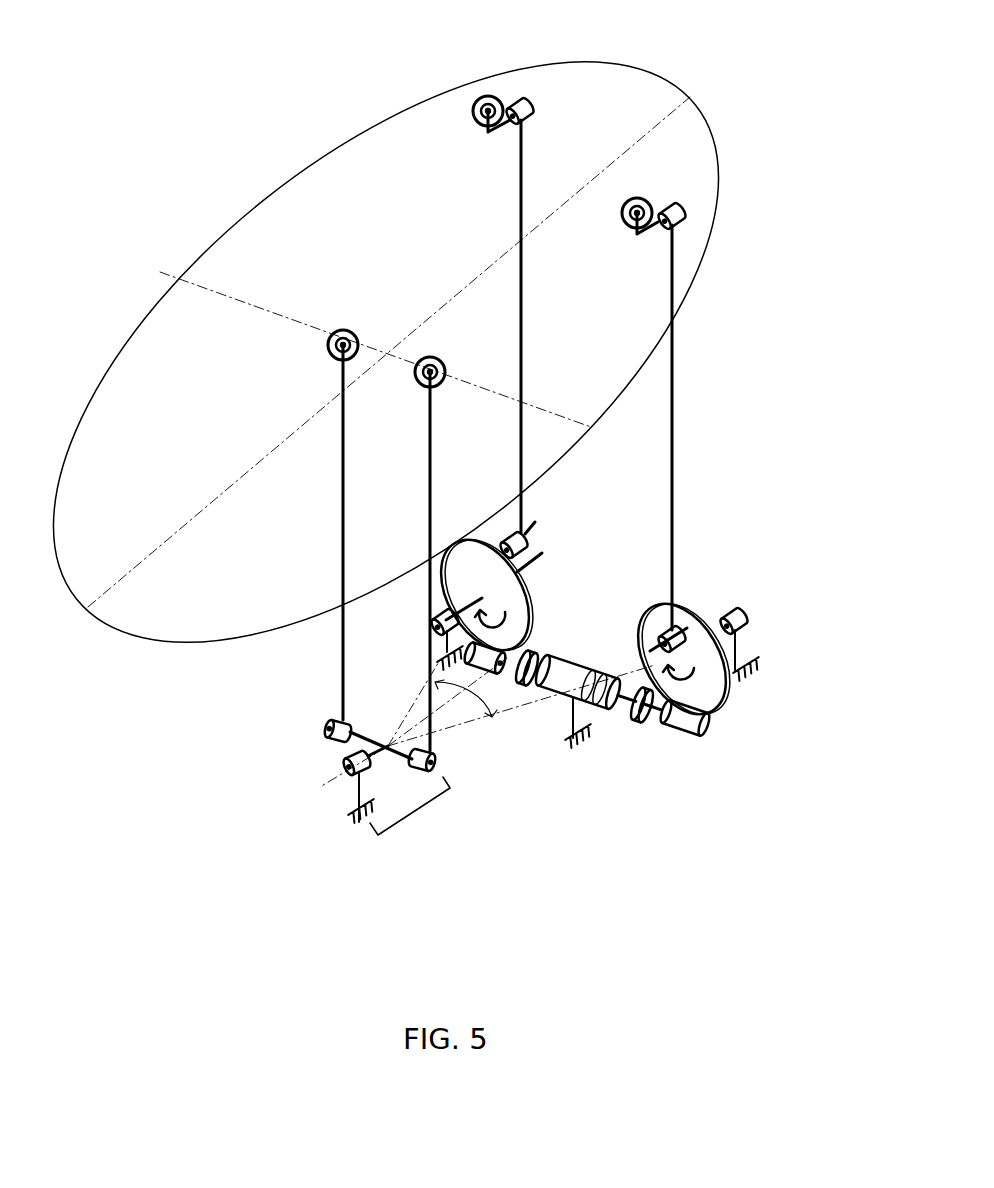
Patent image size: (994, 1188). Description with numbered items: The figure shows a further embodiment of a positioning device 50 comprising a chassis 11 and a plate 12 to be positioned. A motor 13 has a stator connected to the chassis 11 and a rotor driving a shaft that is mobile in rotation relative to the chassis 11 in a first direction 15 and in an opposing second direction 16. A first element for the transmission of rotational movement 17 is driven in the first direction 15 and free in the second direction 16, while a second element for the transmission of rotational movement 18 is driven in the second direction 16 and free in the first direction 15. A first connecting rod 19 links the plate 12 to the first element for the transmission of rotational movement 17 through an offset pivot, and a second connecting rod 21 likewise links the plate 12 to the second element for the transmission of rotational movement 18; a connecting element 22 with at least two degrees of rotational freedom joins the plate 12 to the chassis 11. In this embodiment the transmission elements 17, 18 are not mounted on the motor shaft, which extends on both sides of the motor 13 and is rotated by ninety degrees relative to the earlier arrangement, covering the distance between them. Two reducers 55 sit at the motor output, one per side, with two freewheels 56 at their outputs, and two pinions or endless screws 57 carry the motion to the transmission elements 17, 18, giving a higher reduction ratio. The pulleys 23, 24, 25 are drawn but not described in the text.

The chassis 11 is at (737, 630).
The plate 12 is at (702, 127).
The motor 13 is at (577, 653).
The first direction 15 is at (527, 615).
The second direction 16 is at (722, 682).
The first element for the transmission of rotational movement 17 is at (527, 592).
The second element for the transmission of rotational movement 18 is at (700, 667).
The first connecting rod 19 is at (521, 275).
The second connecting rod 21 is at (673, 397).
The connecting element 22 is at (415, 812).
The lower pulleys 23 is at (350, 330).
The first upper pulley 24 is at (514, 116).
The second upper pulley 25 is at (668, 217).
The positioning device 50 is at (143, 94).
The reducers 55 is at (543, 668).
The freewheels 56 is at (643, 720).
The pinions or endless screws 57 is at (686, 724).